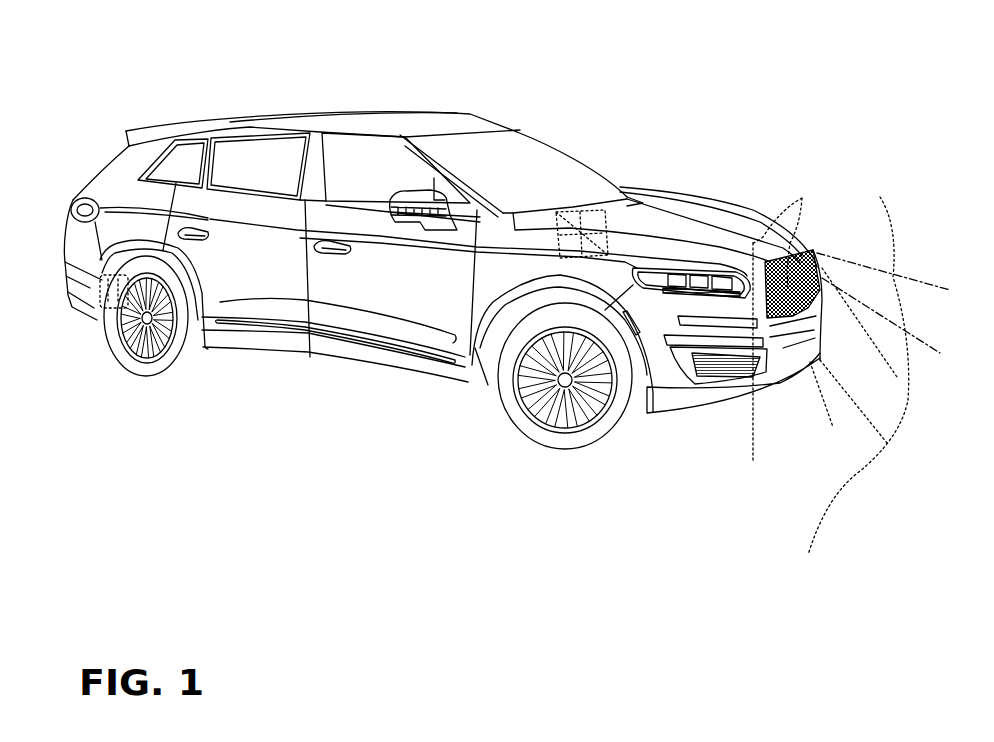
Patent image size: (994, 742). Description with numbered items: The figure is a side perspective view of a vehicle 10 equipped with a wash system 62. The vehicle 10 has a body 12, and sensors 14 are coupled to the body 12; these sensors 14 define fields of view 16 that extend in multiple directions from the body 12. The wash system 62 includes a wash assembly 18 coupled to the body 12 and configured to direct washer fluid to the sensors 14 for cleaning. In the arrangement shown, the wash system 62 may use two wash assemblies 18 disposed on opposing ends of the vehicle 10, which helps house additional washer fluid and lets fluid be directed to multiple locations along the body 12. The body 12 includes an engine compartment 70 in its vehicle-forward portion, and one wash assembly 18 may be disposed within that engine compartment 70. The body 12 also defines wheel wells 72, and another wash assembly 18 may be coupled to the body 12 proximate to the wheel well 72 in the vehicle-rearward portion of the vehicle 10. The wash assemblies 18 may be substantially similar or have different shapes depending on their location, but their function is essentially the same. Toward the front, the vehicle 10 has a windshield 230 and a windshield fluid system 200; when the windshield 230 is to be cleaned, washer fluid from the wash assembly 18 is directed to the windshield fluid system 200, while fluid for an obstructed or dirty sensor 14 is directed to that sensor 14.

The vehicle 10 is at (642, 108).
The body 12 is at (740, 222).
The sensors 14 is at (802, 198).
The fields of view 16 is at (869, 376).
The wash assembly 18 is at (78, 318).
The wash system 62 is at (62, 242).
The engine compartment 70 is at (683, 225).
The wheel wells 72 is at (122, 263).
The windshield fluid system 200 is at (652, 193).
The windshield 230 is at (532, 160).